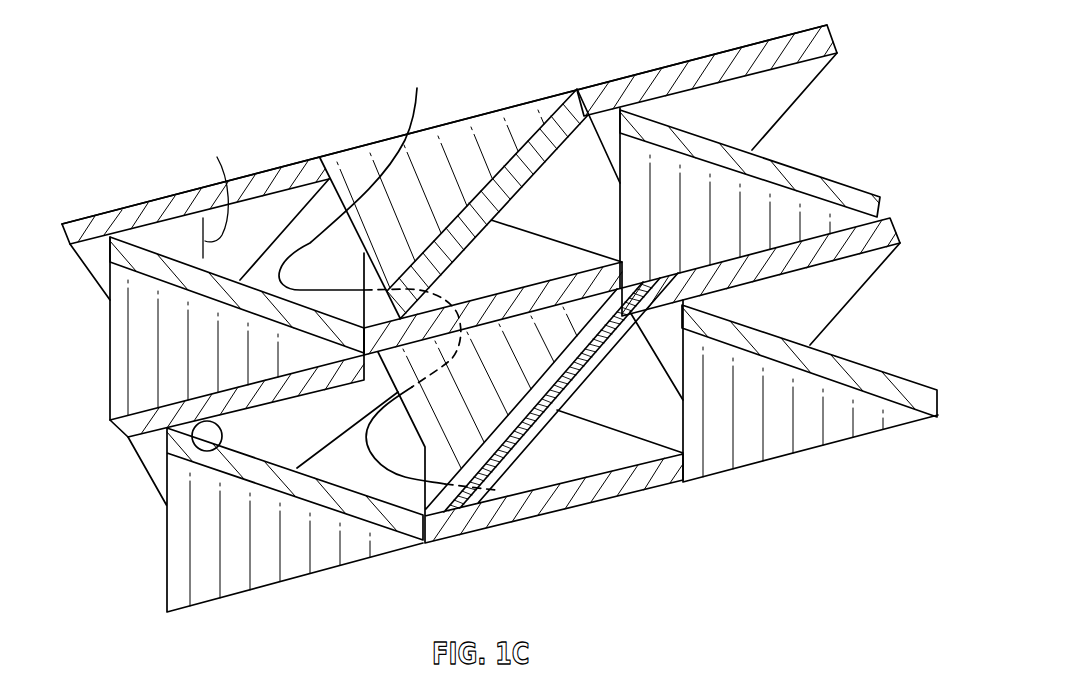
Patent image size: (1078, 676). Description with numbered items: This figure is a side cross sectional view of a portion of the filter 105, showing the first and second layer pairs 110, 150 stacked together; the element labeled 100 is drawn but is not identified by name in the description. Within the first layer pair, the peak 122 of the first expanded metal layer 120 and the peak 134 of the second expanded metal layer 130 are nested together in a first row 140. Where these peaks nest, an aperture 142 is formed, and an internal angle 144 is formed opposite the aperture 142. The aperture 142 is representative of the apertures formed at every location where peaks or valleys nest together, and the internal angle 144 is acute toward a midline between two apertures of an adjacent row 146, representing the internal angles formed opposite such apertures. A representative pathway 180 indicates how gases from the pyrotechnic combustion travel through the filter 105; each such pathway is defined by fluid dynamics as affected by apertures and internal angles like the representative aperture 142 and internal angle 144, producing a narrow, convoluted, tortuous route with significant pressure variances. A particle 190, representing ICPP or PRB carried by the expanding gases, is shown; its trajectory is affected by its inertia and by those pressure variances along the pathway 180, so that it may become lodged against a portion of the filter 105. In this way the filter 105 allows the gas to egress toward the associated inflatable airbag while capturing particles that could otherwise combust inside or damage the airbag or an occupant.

The optical structure 100 is at (877, 158).
The filter 105 is at (193, 78).
The first layer pair 110 is at (822, 110).
The first expanded metal layer 120 is at (797, 30).
The peak of the first expanded metal layer 122 is at (82, 220).
The second expanded metal layer 130 is at (880, 213).
The peak of the second expanded metal layer 134 is at (108, 262).
The first row 140 is at (184, 166).
The aperture 142 is at (104, 345).
The internal angle 144 is at (217, 194).
The adjacent row 146 is at (366, 128).
The second layer pair 150 is at (870, 350).
The representative pathway 180 is at (511, 497).
The particle 190 is at (223, 436).